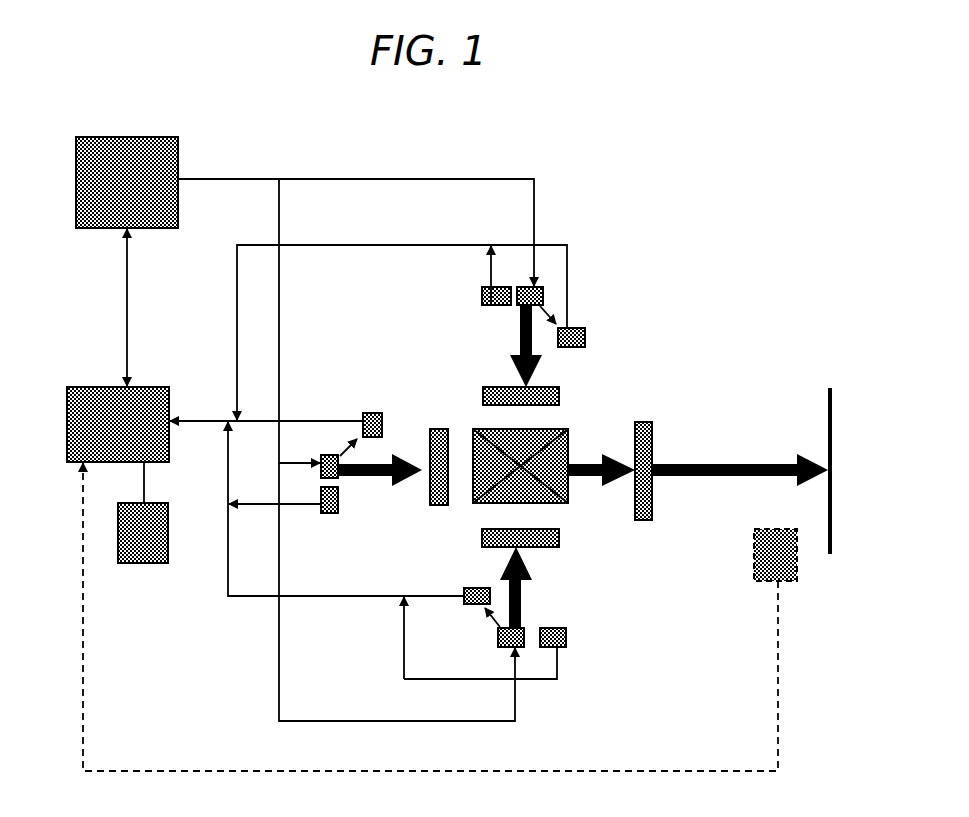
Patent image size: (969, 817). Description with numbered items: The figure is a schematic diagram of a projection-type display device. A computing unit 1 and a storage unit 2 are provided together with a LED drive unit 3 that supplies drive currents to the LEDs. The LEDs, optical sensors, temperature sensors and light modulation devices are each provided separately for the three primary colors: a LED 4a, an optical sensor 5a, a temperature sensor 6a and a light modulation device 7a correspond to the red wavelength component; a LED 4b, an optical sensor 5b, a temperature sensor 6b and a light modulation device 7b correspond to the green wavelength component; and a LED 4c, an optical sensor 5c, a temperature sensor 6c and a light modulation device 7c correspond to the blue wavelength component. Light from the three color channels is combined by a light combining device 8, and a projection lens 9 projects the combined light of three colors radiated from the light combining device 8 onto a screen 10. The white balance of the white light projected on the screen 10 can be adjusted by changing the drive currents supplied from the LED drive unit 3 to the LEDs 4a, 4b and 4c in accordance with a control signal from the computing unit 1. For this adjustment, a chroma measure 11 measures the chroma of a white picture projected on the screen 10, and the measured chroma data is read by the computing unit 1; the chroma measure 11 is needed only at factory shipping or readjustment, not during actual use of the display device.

The computing unit 1 is at (76, 425).
The storage unit 2 is at (142, 545).
The LED drive unit 3 is at (88, 198).
The LED 4a is at (543, 296).
The LED 4b is at (328, 460).
The LED 4c is at (510, 634).
The optical sensor 5a is at (585, 338).
The optical sensor 5b is at (372, 420).
The optical sensor 5c is at (478, 594).
The temperature sensor 6a is at (484, 296).
The temperature sensor 6b is at (329, 504).
The temperature sensor 6c is at (554, 636).
The light modulation device 7a is at (548, 400).
The light modulation device 7b is at (439, 496).
The light modulation device 7c is at (553, 537).
The light combining device 8 is at (550, 484).
The projection lens 9 is at (641, 515).
The screen 10 is at (832, 504).
The chroma measure 11 is at (788, 562).